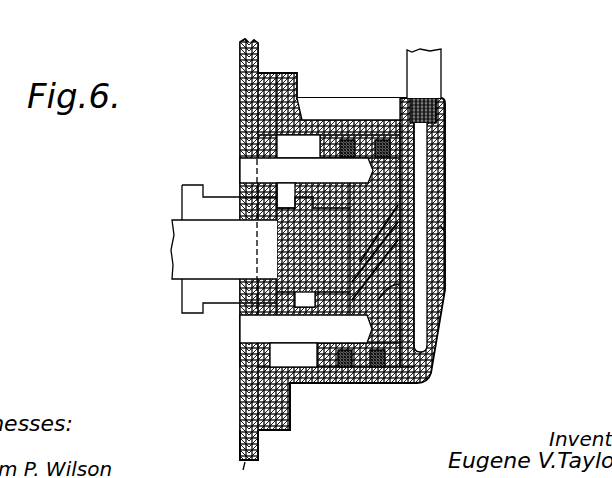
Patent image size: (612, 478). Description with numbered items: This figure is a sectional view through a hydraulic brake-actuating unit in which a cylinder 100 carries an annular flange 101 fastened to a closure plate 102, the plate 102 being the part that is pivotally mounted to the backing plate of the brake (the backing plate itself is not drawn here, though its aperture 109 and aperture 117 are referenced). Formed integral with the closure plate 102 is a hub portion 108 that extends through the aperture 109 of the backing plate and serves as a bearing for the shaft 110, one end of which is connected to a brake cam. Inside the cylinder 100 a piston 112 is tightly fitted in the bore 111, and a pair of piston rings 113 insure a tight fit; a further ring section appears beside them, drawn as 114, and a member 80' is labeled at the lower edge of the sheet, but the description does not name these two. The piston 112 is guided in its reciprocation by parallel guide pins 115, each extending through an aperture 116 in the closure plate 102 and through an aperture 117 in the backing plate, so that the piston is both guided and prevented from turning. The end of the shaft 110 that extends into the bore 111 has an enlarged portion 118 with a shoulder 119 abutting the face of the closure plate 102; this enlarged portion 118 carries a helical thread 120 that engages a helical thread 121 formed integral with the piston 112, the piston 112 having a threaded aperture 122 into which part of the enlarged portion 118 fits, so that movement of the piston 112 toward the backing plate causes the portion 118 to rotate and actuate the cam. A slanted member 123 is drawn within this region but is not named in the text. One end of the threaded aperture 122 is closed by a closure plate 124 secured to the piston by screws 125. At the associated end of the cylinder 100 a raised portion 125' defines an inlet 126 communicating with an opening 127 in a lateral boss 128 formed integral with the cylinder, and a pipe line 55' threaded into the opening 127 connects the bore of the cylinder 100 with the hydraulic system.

The pipe line 55' is at (430, 57).
The member 80' is at (239, 470).
The cylinder 100 is at (357, 383).
The annular flange 101 is at (292, 430).
The closure plate 102 is at (268, 432).
The hub portion 108 is at (210, 195).
The aperture 109 is at (245, 310).
The shaft 110 is at (183, 247).
The bore 111 is at (297, 115).
The piston 112 is at (358, 135).
The piston rings 113 is at (345, 140).
The packing ring 114 is at (381, 140).
The guide pins 115 is at (268, 165).
The aperture 116 is at (257, 357).
The aperture 117 is at (240, 345).
The enlarged portion 118 is at (290, 255).
The shoulder 119 is at (268, 283).
The helical thread 120 is at (302, 196).
The helical thread 121 is at (393, 283).
The threaded aperture 122 is at (380, 227).
The cone member 123 is at (355, 105).
The closure plate 124 is at (410, 163).
The screws 125 is at (444, 245).
The raised portion 125' is at (470, 218).
The inlet 126 is at (425, 247).
The opening 127 is at (428, 98).
The lateral boss 128 is at (445, 110).